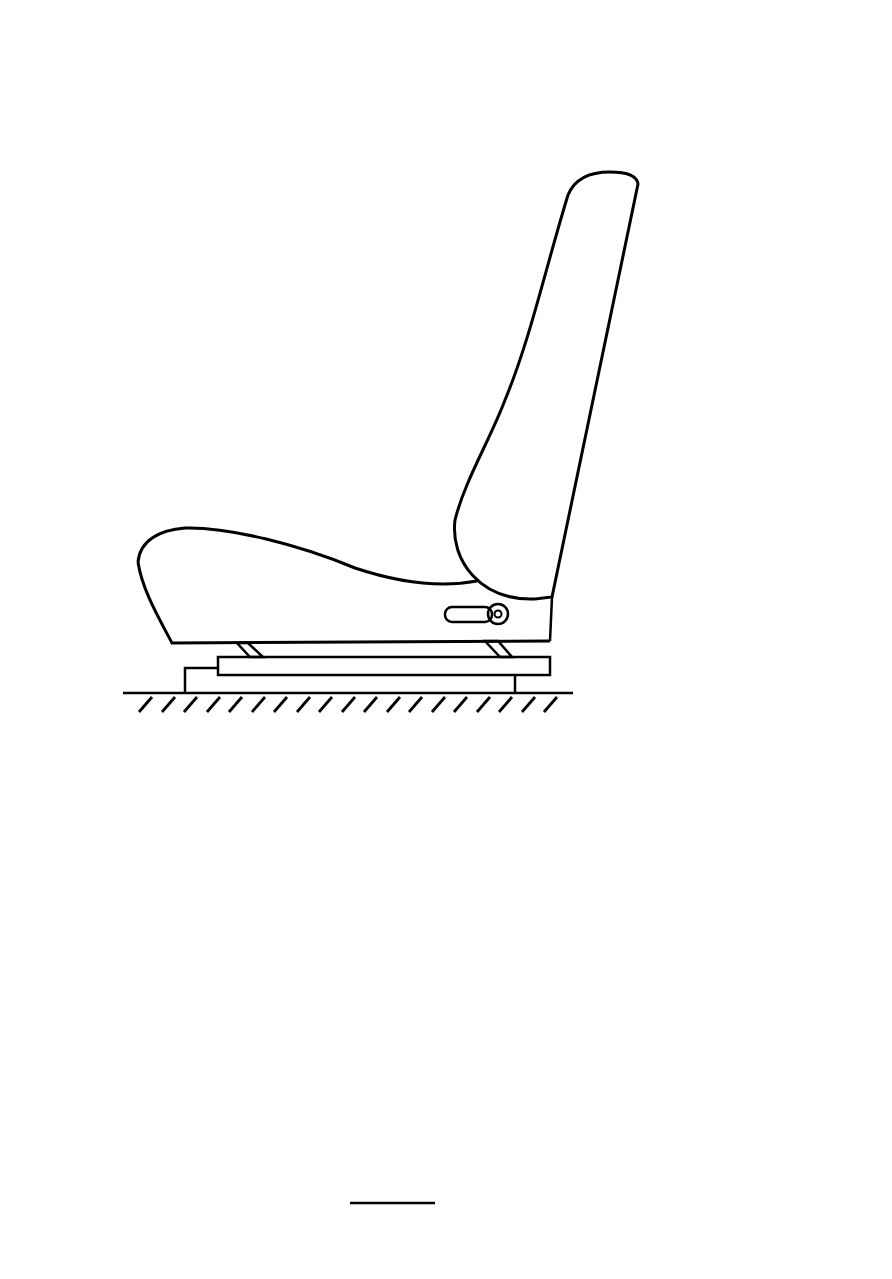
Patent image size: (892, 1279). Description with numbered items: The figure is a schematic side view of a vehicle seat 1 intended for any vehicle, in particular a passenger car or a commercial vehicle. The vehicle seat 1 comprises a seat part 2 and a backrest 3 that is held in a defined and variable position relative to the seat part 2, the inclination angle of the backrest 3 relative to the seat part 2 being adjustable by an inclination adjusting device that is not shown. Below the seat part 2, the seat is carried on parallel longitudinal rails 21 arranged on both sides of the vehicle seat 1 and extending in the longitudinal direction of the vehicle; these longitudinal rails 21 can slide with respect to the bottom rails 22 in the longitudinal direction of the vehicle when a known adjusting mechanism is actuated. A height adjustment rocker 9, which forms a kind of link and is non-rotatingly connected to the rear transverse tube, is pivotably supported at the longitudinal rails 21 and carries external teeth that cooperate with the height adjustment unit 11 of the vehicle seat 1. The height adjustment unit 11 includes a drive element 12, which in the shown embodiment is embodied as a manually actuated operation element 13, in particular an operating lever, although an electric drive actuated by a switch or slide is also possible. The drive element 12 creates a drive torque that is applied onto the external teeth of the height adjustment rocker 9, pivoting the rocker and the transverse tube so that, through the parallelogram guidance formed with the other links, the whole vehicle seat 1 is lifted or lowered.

The vehicle seat 1 is at (436, 608).
The seat part 2 is at (297, 580).
The backrest 3 is at (568, 375).
The height adjustment rocker 9 is at (512, 648).
The height adjustment unit 11 is at (431, 530).
The drive element 12 is at (431, 530).
The manually actuated operation element 13 is at (456, 590).
The longitudinal rails 21 is at (413, 665).
The bottom rails 22 is at (337, 683).